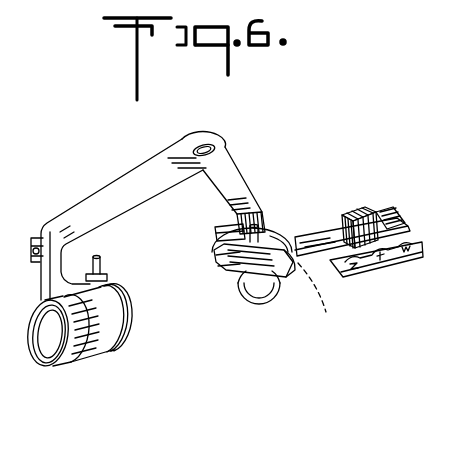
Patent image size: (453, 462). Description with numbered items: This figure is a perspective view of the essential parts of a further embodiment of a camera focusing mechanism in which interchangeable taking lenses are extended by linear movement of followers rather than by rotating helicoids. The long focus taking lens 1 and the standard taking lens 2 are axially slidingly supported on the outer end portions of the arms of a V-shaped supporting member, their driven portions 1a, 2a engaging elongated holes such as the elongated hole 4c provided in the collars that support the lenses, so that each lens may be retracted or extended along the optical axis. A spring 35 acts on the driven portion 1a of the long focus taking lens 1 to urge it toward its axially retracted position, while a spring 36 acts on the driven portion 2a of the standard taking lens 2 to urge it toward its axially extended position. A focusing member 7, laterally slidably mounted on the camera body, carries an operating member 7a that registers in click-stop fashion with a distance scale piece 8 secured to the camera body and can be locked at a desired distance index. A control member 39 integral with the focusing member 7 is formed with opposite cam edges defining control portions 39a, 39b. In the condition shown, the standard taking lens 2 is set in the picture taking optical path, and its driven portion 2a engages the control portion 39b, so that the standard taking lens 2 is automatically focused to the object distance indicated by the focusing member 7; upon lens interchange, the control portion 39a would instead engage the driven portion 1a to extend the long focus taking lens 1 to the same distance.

The long focus taking lens 1 is at (48, 338).
The driven portion 1a is at (95, 272).
The standard taking lens 2 is at (263, 302).
The driven portion 2a is at (260, 238).
The elongated hole 4c is at (106, 278).
The focusing member 7 is at (323, 232).
The operating member 7a is at (366, 204).
The distance scale piece 8 is at (415, 257).
The spring 35 is at (79, 264).
The spring 36 is at (283, 226).
The control member 39 is at (239, 299).
The control portion 39a is at (292, 292).
The control portion 39b is at (222, 263).